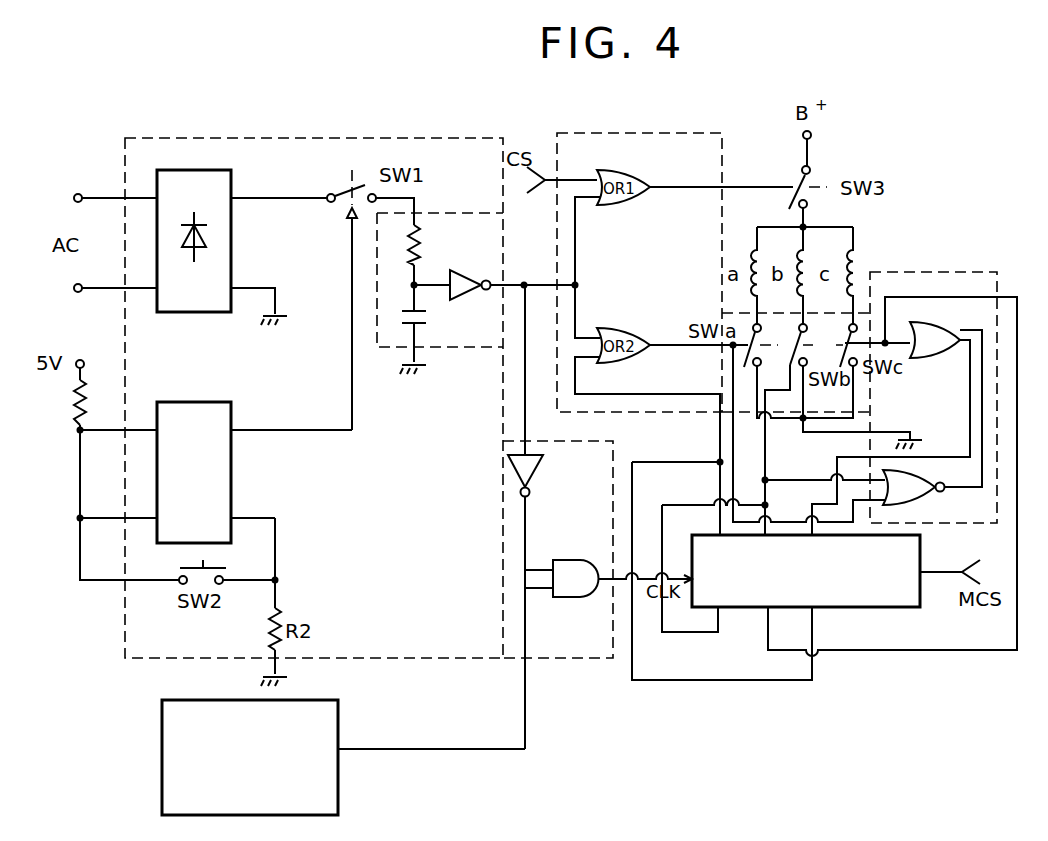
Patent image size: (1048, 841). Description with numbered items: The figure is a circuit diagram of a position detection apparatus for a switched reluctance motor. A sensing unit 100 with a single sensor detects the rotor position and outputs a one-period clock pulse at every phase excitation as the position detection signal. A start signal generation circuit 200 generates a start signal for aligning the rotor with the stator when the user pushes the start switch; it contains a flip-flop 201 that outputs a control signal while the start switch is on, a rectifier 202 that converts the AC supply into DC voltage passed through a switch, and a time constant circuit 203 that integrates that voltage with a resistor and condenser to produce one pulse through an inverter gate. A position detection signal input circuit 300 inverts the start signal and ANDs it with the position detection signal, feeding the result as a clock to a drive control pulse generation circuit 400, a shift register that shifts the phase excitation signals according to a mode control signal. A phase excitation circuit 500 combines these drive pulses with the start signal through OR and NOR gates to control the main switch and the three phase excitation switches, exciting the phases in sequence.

The sensing unit 100 is at (162, 751).
The start signal generation circuit 200 is at (376, 138).
The flip-flop 201 is at (231, 480).
The rectifier 202 is at (194, 259).
The time constant circuit 203 is at (441, 350).
The position detection signal input circuit 300 is at (558, 655).
The drive control pulse generation circuit 400 is at (835, 608).
The phase excitation circuit 500 is at (941, 270).